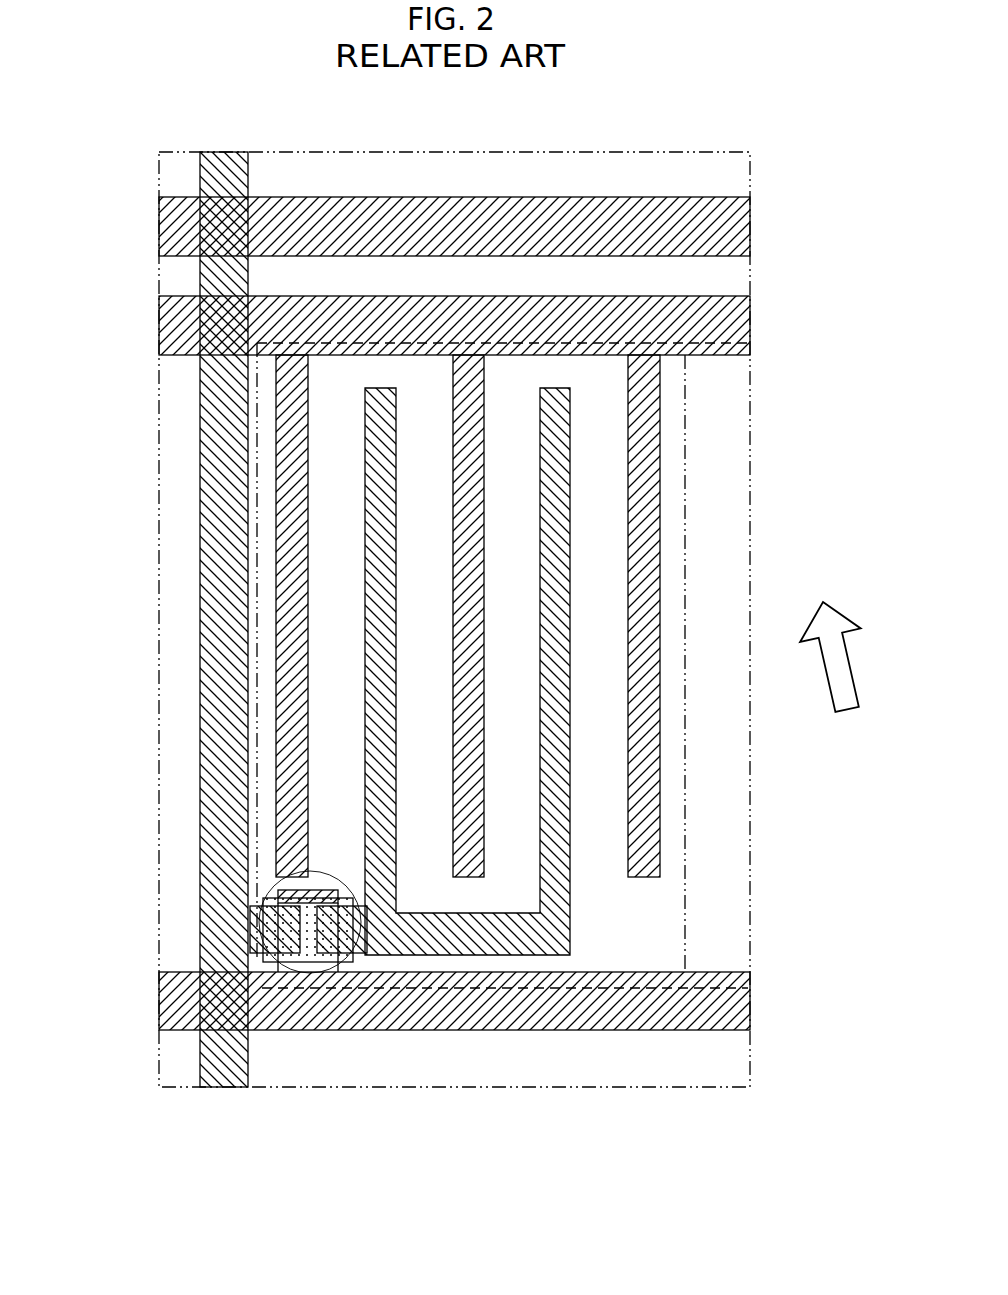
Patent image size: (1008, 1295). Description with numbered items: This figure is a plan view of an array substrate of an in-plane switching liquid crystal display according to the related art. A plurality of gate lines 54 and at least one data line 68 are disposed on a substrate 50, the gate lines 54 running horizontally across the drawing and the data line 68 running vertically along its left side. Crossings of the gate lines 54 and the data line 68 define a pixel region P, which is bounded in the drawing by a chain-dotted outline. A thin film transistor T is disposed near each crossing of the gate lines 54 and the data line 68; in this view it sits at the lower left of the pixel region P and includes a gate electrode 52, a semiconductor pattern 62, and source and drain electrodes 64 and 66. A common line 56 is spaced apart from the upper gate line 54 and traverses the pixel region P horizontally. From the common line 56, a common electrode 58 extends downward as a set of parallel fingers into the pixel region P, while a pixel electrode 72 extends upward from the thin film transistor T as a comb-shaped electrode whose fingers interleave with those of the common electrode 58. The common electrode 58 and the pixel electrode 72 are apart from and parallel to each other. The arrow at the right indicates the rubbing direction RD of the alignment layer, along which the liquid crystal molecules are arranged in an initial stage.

The substrate 50 is at (752, 760).
The gate electrode 52 is at (312, 876).
The gate line 54 is at (758, 197).
The common line 56 is at (758, 296).
The common electrode 58 is at (276, 525).
The semiconductor pattern 62 is at (308, 962).
The source electrode 64 is at (272, 953).
The drain electrode 66 is at (335, 953).
The data line 68 is at (248, 133).
The pixel electrode 72 is at (365, 417).
The thin film transistor T is at (257, 927).
The pixel region P is at (687, 810).
The rubbing direction RD is at (843, 657).